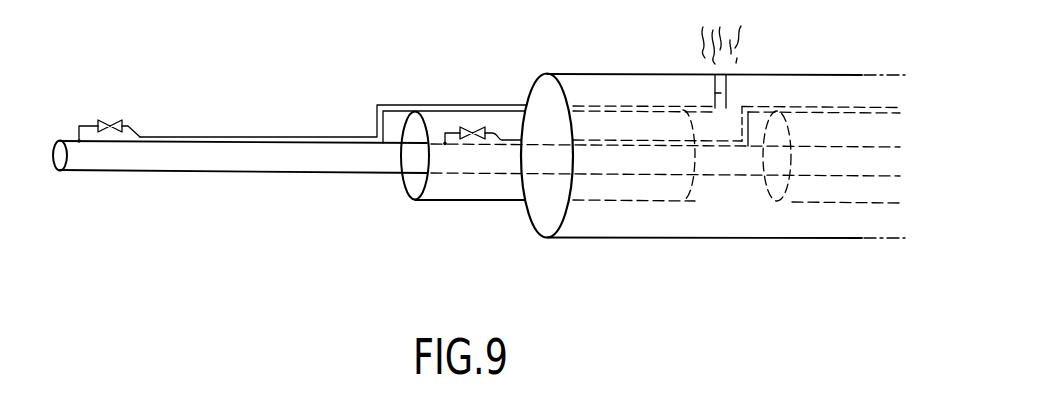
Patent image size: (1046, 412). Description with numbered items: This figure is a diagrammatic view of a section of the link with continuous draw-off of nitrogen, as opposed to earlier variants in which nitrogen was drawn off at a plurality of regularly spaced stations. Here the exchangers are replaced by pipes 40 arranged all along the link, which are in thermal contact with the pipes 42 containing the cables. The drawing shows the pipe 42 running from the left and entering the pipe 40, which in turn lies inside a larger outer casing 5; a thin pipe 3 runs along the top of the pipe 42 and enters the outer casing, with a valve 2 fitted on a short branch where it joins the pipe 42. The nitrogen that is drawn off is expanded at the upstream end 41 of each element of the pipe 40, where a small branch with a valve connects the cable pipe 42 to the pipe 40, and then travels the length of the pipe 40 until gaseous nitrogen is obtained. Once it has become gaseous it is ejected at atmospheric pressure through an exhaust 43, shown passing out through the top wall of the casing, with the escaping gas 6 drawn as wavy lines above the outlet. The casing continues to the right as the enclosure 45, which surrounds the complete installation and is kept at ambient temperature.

The valve 2 is at (112, 120).
The pipe 3 is at (247, 137).
The outer casing 5 is at (470, 105).
The escaping gas 6 is at (745, 47).
The pipe 40 is at (483, 202).
The upstream end 41 is at (80, 142).
The pipe containing the cables 42 is at (180, 162).
The exhaust 43 is at (717, 80).
The enclosure 45 is at (827, 74).